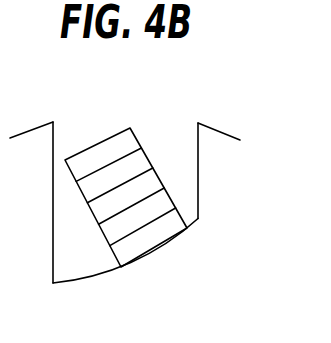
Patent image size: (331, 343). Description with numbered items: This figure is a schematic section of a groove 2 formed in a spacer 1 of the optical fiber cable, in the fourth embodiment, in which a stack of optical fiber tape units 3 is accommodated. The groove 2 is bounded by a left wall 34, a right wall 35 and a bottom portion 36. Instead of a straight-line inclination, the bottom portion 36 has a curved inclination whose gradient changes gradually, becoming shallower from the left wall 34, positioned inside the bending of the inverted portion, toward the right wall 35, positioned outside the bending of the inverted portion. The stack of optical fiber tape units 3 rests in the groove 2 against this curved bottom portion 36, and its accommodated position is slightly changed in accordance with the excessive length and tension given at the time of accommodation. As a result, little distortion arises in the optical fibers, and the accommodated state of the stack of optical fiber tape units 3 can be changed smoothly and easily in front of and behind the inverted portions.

The spacer 1 is at (33, 133).
The groove 2 is at (126, 202).
The stack of optical fiber tape units 3 is at (140, 165).
The left wall 34 is at (53, 175).
The right wall 35 is at (197, 212).
The bottom portion 36 is at (110, 272).